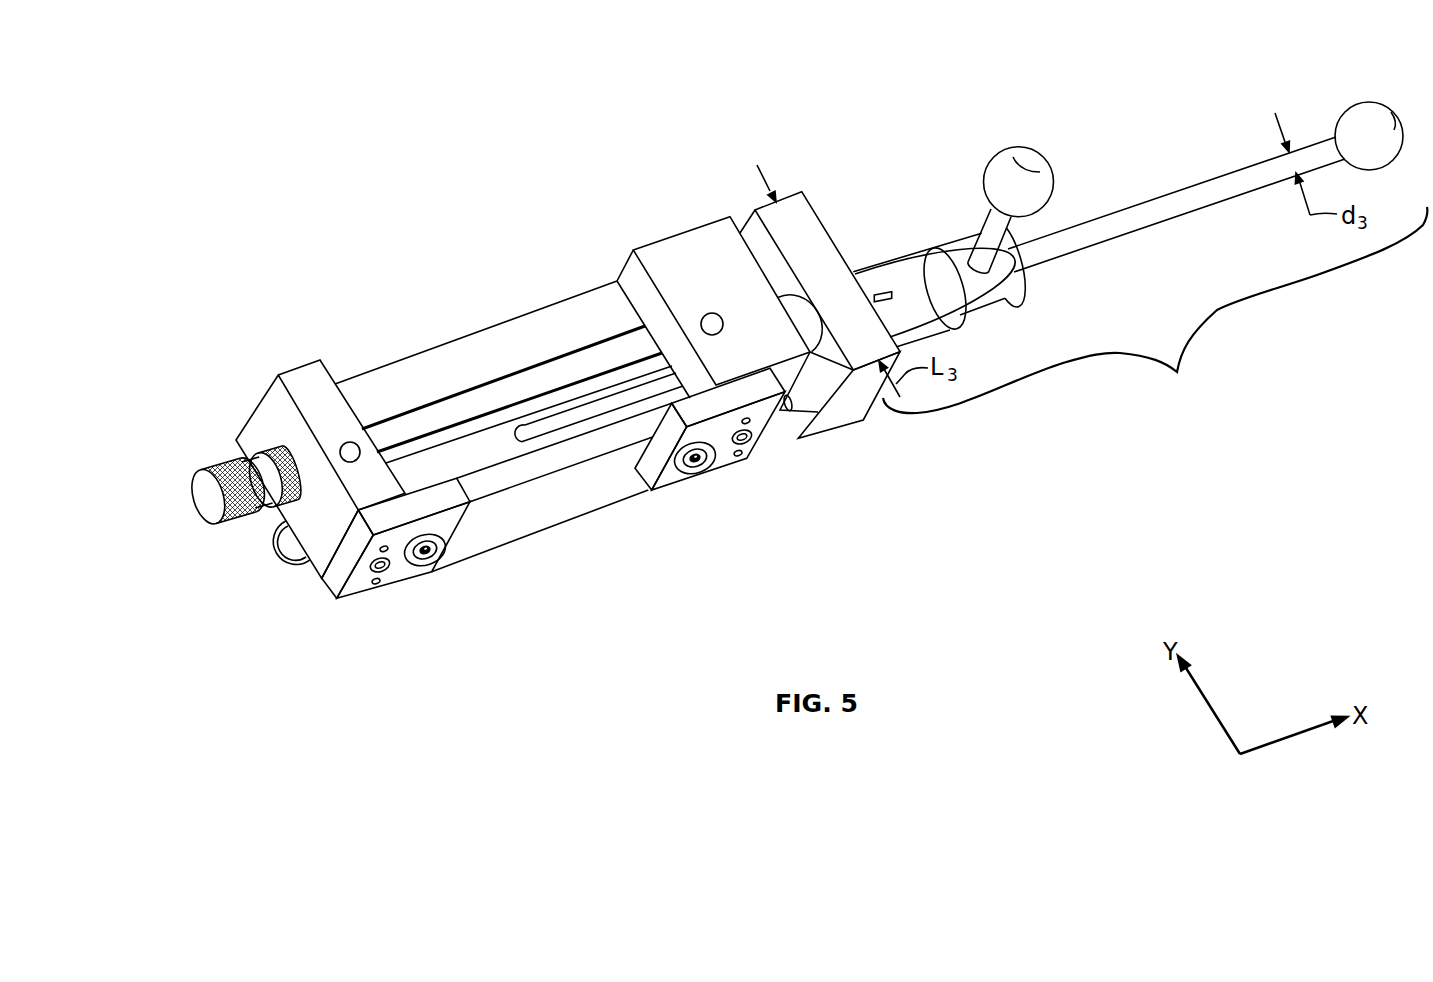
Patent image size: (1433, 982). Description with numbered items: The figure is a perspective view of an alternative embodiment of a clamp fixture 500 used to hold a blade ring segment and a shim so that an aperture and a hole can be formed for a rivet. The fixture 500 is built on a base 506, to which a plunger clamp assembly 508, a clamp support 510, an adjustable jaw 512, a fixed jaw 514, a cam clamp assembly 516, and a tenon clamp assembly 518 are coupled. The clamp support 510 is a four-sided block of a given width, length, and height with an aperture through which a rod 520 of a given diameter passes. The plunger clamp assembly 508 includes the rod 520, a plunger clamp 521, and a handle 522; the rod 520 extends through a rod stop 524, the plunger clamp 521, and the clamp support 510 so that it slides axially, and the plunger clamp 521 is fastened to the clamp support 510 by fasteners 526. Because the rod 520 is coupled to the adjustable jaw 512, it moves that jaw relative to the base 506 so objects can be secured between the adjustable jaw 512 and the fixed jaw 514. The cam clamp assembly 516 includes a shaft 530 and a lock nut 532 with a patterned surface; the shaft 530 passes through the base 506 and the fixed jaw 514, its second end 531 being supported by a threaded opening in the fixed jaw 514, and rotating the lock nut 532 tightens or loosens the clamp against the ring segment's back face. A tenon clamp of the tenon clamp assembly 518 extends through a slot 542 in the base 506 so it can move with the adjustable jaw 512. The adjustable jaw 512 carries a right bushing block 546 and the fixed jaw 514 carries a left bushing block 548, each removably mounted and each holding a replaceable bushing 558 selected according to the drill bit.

The clamp fixture 500 is at (257, 176).
The base 506 is at (537, 500).
The plunger clamp assembly 508 is at (1155, 310).
The clamp support 510 is at (813, 217).
The adjustable jaw 512 is at (683, 250).
The fixed jaw 514 is at (302, 373).
The cam clamp assembly 516 is at (191, 476).
The tenon clamp assembly 518 is at (278, 557).
The rod 520 is at (1247, 171).
The plunger clamp 521 is at (918, 255).
The handle 522 is at (1032, 163).
The rod stop 524 is at (1366, 107).
The fastener 526 is at (875, 292).
The shaft 530 is at (448, 409).
The second end 531 is at (275, 438).
The lock nut 532 is at (218, 467).
The slot 542 is at (555, 423).
The right bushing block 546 is at (667, 486).
The left bushing block 548 is at (347, 596).
The bushing 558 is at (436, 552).